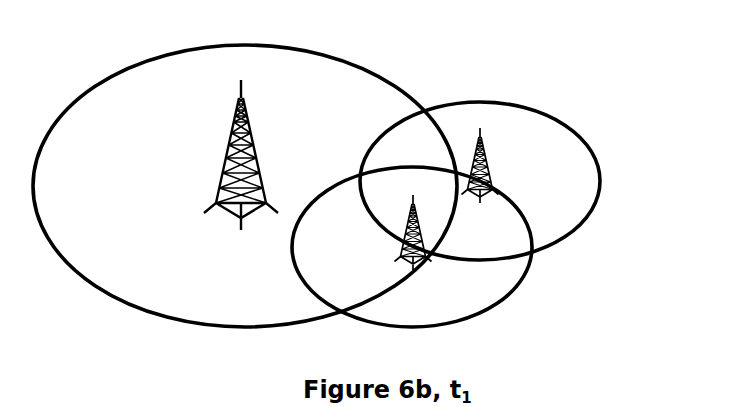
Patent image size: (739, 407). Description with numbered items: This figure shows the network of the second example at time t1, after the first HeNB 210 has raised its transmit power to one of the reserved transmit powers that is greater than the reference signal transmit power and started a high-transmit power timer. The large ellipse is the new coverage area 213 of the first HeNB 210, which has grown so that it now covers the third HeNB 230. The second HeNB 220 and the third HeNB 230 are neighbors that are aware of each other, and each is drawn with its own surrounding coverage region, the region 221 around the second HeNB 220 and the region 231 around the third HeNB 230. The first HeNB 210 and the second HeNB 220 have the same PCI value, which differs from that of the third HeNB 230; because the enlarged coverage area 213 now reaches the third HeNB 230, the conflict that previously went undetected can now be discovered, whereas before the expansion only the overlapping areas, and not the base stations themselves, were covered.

The first HeNB 210 is at (240, 103).
The new coverage area 213 is at (315, 47).
The second HeNB 220 is at (487, 162).
The coverage area of base station 220 221 is at (600, 172).
The third HeNB 230 is at (420, 273).
The coverage area of base station 230 231 is at (525, 276).